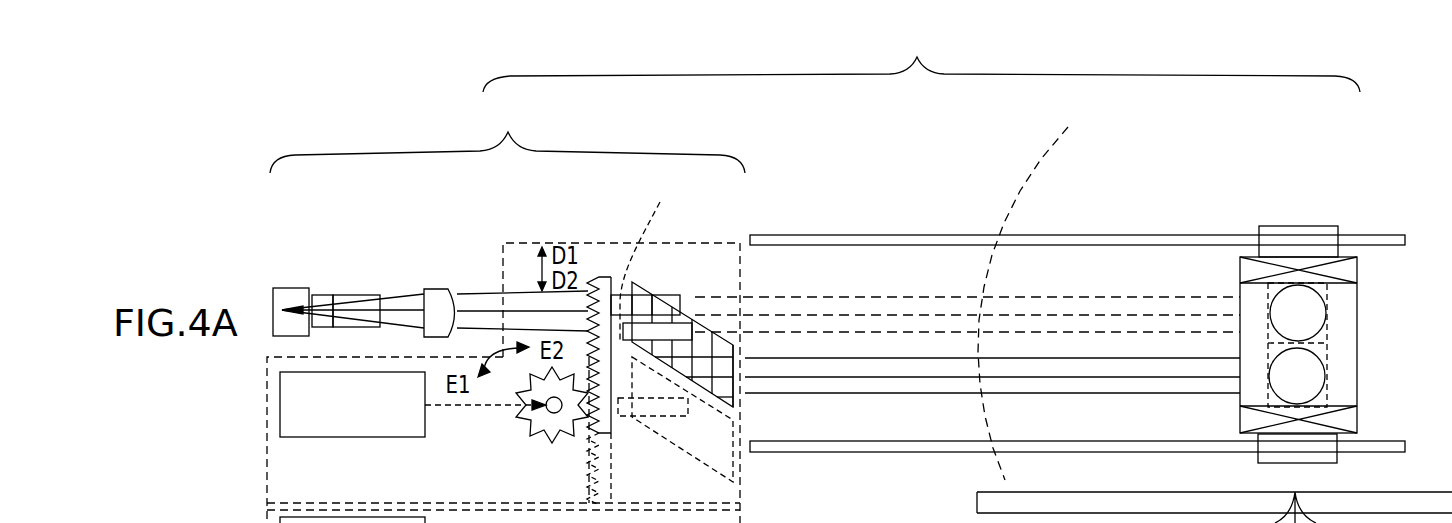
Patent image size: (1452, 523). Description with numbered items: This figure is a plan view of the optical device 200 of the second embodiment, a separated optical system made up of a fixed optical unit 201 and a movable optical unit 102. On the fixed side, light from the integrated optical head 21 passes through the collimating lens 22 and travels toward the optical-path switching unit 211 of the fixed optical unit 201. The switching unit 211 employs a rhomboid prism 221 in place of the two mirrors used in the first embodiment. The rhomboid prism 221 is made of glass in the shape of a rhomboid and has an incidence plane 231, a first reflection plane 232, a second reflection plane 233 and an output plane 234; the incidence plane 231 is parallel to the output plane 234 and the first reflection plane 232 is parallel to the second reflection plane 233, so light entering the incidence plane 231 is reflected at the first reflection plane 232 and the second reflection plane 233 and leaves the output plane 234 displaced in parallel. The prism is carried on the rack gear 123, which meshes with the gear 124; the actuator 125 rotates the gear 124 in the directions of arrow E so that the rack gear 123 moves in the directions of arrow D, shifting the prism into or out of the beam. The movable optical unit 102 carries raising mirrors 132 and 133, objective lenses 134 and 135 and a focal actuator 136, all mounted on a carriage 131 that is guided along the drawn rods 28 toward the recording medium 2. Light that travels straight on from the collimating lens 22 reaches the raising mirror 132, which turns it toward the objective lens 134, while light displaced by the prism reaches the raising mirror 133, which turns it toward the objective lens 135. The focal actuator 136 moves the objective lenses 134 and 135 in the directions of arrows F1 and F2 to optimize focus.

The wafer 2 is at (1017, 188).
The integrated optical head 21 is at (331, 295).
The collimating lens 22 is at (438, 290).
The guide rod 28 is at (1123, 236).
The movable optical unit 102 is at (1302, 215).
The rack gear 123 is at (588, 433).
The gear 124 is at (527, 423).
The actuator 125 is at (336, 437).
The carriage 131 is at (1352, 257).
The raising mirror 132 is at (1340, 286).
The raising mirror 133 is at (1327, 356).
The objective lens 134 is at (1330, 333).
The objective lens 135 is at (1327, 397).
The focal actuator 136 is at (1358, 421).
The optical device 200 is at (921, 58).
The fixed optical unit 201 is at (507, 135).
The optical-path switching unit 211 is at (555, 243).
The rhomboid prism 221 is at (652, 286).
The incidence plane 231 is at (656, 259).
The first reflection plane 232 is at (688, 313).
The second reflection plane 233 is at (678, 372).
The output plane 234 is at (740, 382).